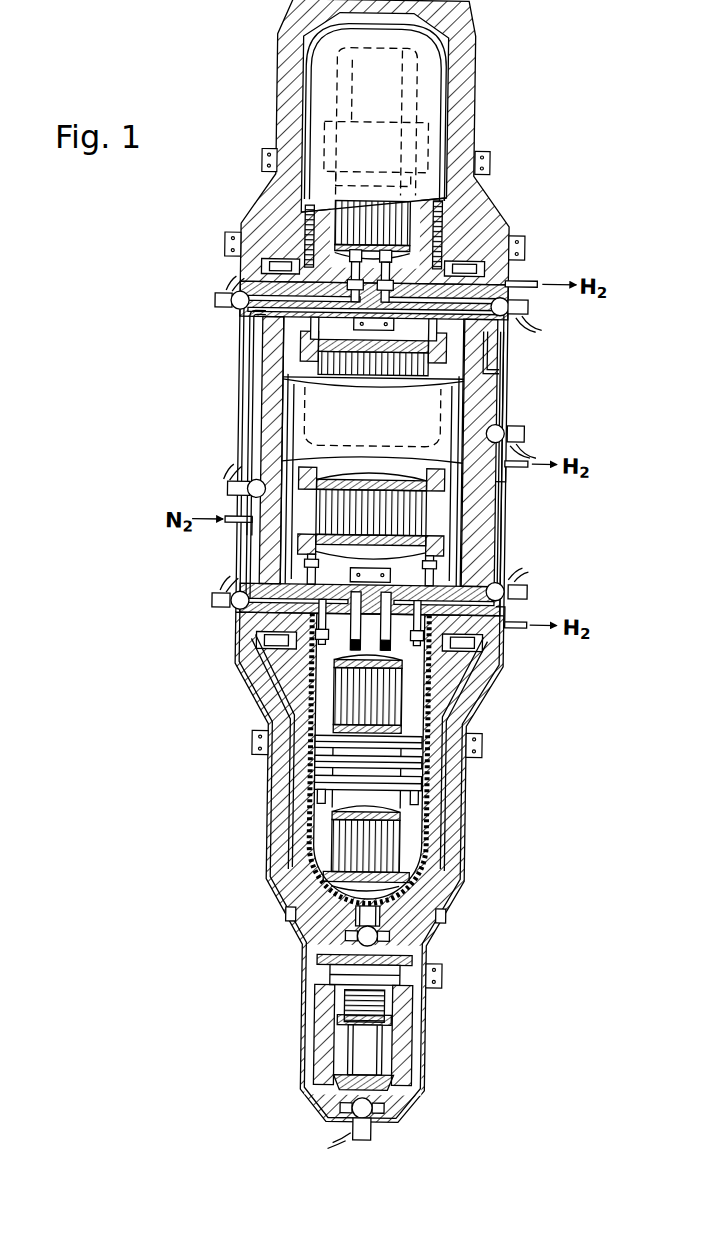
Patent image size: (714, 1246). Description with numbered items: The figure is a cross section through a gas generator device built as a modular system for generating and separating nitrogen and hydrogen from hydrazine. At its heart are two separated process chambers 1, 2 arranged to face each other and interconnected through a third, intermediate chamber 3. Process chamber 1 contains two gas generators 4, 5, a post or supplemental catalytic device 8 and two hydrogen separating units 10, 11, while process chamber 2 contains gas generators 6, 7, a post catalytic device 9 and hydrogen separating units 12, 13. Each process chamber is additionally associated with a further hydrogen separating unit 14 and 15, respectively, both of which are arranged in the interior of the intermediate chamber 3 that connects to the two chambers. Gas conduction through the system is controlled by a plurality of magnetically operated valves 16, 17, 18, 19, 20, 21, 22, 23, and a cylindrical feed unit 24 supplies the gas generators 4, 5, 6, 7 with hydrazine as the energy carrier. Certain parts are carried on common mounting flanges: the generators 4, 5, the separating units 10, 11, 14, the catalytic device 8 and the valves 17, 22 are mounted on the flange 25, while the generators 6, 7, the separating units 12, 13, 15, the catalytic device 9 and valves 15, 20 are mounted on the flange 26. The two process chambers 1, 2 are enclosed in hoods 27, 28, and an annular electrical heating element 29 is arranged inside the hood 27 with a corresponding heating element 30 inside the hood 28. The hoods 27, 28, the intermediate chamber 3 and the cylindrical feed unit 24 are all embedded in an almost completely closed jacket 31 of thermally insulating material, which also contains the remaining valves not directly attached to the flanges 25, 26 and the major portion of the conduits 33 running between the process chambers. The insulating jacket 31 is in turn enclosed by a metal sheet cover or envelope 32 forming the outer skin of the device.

The process chamber 1 is at (303, 790).
The process chamber 2 is at (297, 71).
The third chamber 3 is at (283, 432).
The gas generator 4 is at (403, 630).
The gas generator 5 is at (323, 642).
The gas generator 6 is at (351, 268).
The gas generator 7 is at (397, 265).
The post or supplemental catalytic device 8 is at (320, 775).
The post or supplemental catalytic device 9 is at (314, 145).
The hydrogen separating unit 10 is at (338, 847).
The hydrogen separating unit 11 is at (342, 700).
The hydrogen separating unit 12 is at (331, 215).
The hydrogen separating unit 13 is at (333, 90).
The hydrogen separating unit 14 is at (325, 525).
The hydrogen separating unit 15 is at (298, 353).
The magnetically operated valve 16 is at (374, 945).
The magnetically operated valve 17 is at (522, 590).
The magnetically operated valve 18 is at (500, 425).
The magnetically operated valve 19 is at (516, 318).
The magnetically operated valve 20 is at (227, 298).
The magnetically operated valve 21 is at (250, 489).
The magnetically operated valve 22 is at (230, 603).
The magnetically operated valve 23 is at (374, 1110).
The feed unit 24 is at (385, 1049).
The flange 25 is at (500, 580).
The flange 26 is at (506, 300).
The hood 27 is at (444, 830).
The hood 28 is at (449, 95).
The annular electrical heating element 29 is at (431, 780).
The heating element 30 is at (466, 270).
The jacket 31 is at (260, 398).
The metal sheet, cover or envelope 32 is at (472, 870).
The conduits 33 is at (495, 372).